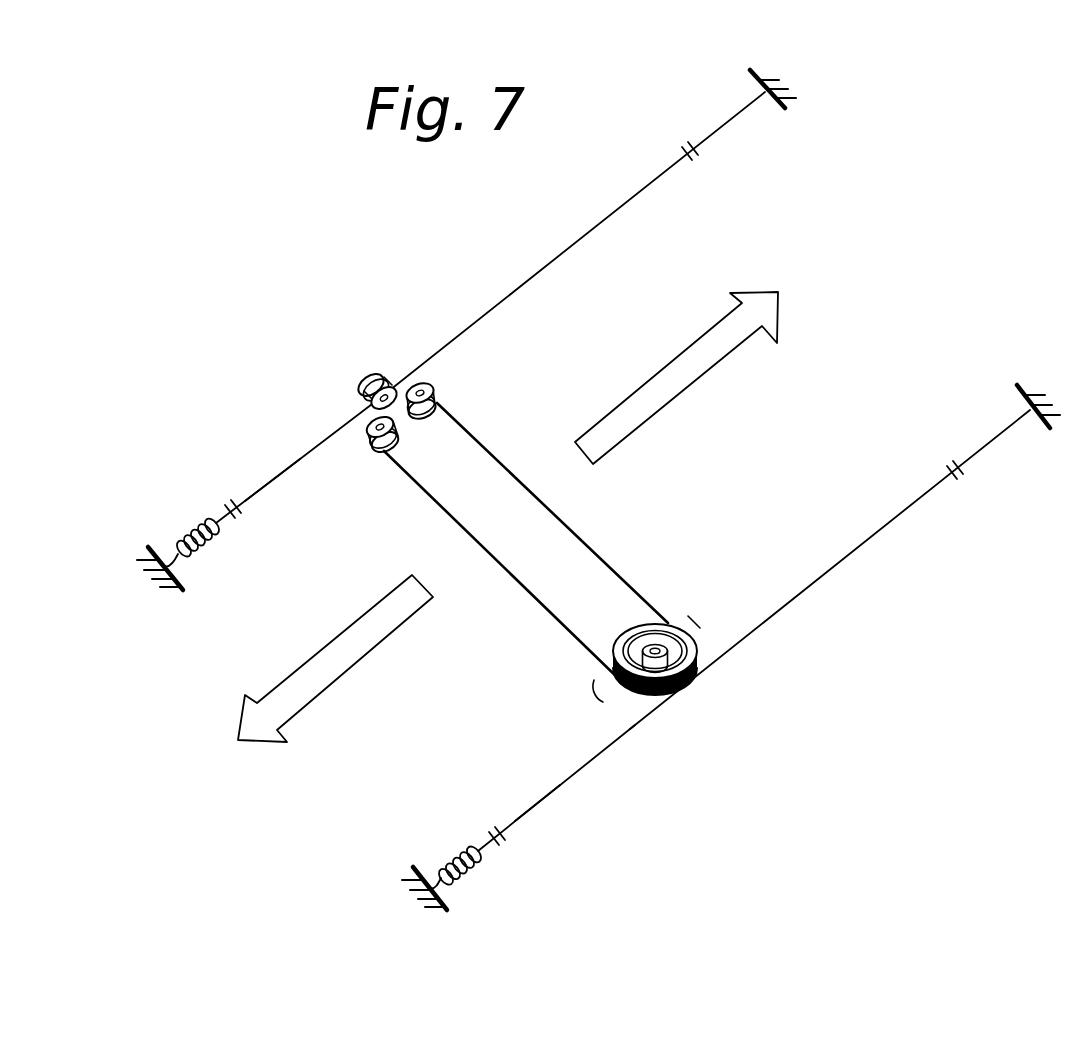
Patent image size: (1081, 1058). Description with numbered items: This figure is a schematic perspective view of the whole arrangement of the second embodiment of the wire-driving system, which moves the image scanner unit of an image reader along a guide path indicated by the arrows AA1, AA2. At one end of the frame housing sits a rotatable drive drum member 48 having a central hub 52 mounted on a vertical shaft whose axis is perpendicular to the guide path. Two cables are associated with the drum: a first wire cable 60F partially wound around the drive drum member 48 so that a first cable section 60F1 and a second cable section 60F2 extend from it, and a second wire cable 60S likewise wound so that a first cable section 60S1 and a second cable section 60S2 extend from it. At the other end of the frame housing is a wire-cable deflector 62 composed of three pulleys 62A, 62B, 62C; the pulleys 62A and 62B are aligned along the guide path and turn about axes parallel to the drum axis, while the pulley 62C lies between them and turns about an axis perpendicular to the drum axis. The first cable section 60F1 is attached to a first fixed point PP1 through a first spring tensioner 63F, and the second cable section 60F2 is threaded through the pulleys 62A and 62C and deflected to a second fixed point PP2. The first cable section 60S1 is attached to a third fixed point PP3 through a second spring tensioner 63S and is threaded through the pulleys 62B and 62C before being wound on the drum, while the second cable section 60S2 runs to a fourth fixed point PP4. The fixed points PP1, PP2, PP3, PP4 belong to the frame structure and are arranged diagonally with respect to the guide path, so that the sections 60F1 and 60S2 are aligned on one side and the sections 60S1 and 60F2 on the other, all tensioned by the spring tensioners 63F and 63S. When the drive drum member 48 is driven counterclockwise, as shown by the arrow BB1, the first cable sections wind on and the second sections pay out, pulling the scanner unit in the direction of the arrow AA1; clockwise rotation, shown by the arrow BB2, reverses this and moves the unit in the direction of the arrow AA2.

The drive drum member 48 is at (695, 713).
The central hub 52 is at (656, 648).
The wire-cable deflector 62 is at (437, 402).
The pulley 62A is at (433, 386).
The pulley 62B is at (372, 432).
The pulley 62C is at (388, 385).
The second wire cable 60S is at (270, 465).
The first cable section 60S1 is at (263, 490).
The second cable section 60S2 is at (848, 556).
The first wire cable 60F is at (627, 750).
The first cable section 60F1 is at (533, 808).
The second cable section 60F2 is at (583, 236).
The second spring tensioner 63S is at (200, 548).
The first spring tensioner 63F is at (470, 866).
The first fixed point PP1 is at (430, 878).
The second fixed point PP2 is at (765, 92).
The third fixed point PP3 is at (165, 560).
The fourth fixed point PP4 is at (1030, 410).
The arrow AA1 is at (350, 668).
The arrow AA2 is at (695, 383).
The arrow BB1 is at (605, 706).
The arrow BB2 is at (700, 631).